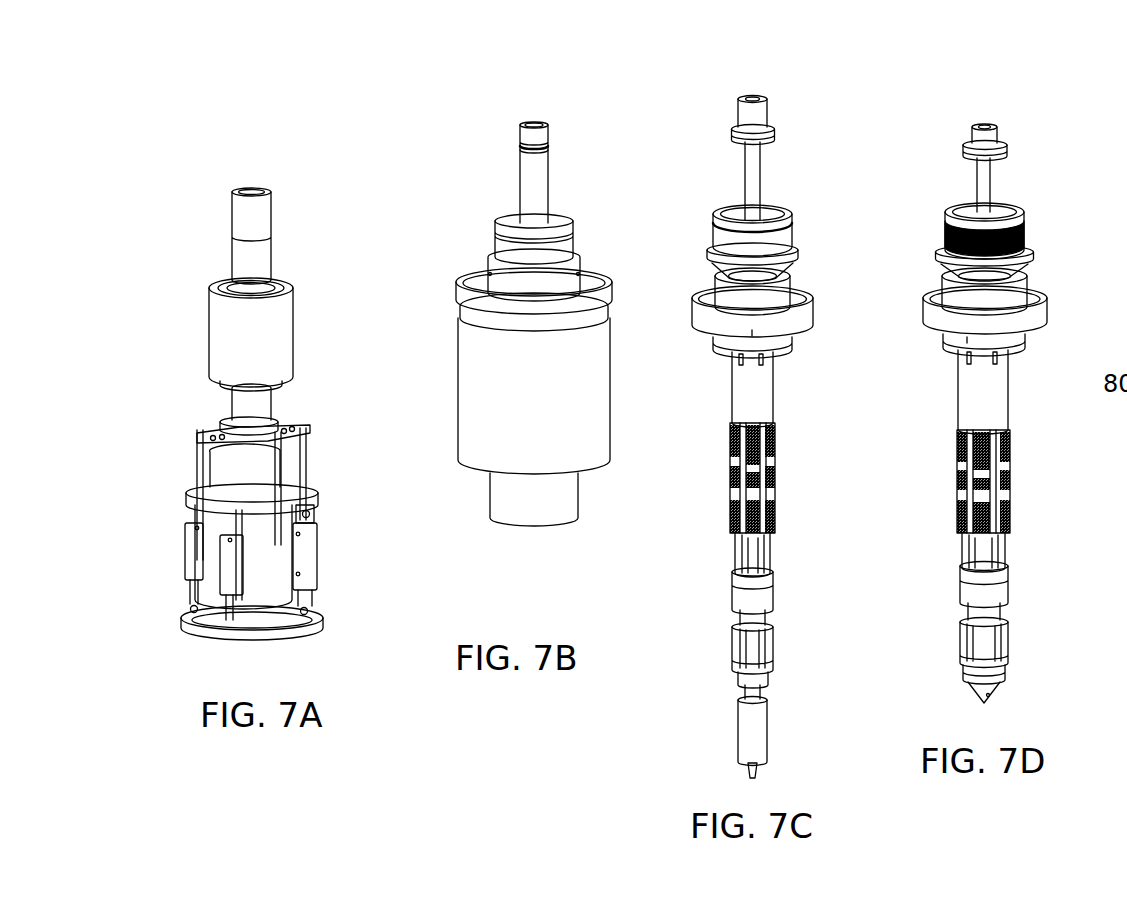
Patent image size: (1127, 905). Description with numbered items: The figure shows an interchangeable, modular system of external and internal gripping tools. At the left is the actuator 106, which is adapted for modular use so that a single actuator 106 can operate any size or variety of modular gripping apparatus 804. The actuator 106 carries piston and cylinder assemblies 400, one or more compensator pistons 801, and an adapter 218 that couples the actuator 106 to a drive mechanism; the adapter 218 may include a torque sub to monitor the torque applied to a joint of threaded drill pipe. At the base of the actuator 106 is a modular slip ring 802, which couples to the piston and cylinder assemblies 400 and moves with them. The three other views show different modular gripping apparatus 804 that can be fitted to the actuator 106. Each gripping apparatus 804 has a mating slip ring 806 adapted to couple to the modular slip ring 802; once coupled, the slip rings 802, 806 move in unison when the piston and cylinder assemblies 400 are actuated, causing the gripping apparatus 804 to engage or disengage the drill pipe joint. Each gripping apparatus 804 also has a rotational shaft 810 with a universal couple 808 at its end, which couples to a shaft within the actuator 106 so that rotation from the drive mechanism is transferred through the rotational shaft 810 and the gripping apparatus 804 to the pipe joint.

In FIG. 7A, the actuator 106 is at (162, 550).
In FIG. 7A, the adapter 218 is at (203, 323).
In FIG. 7A, the piston and cylinder assemblies 400 is at (322, 553).
In FIG. 7A, the compensator pistons 801 is at (197, 462).
In FIG. 7A, the modular slip ring 802 is at (307, 633).
In FIG. 7B, the modular gripping apparatus 804 is at (441, 387).
In FIG. 7C, the modular gripping apparatus 804 is at (721, 390).
In FIG. 7D, the modular gripping apparatus 804 is at (943, 398).
In FIG. 7B, the mating slip ring 806 is at (614, 279).
In FIG. 7C, the mating slip ring 806 is at (815, 305).
In FIG. 7D, the mating slip ring 806 is at (1049, 305).
In FIG. 7B, the universal couple 808 is at (518, 128).
In FIG. 7C, the universal couple 808 is at (776, 110).
In FIG. 7D, the universal couple 808 is at (1013, 143).
In FIG. 7B, the rotational shaft 810 is at (549, 183).
In FIG. 7C, the rotational shaft 810 is at (761, 167).
In FIG. 7D, the rotational shaft 810 is at (991, 183).